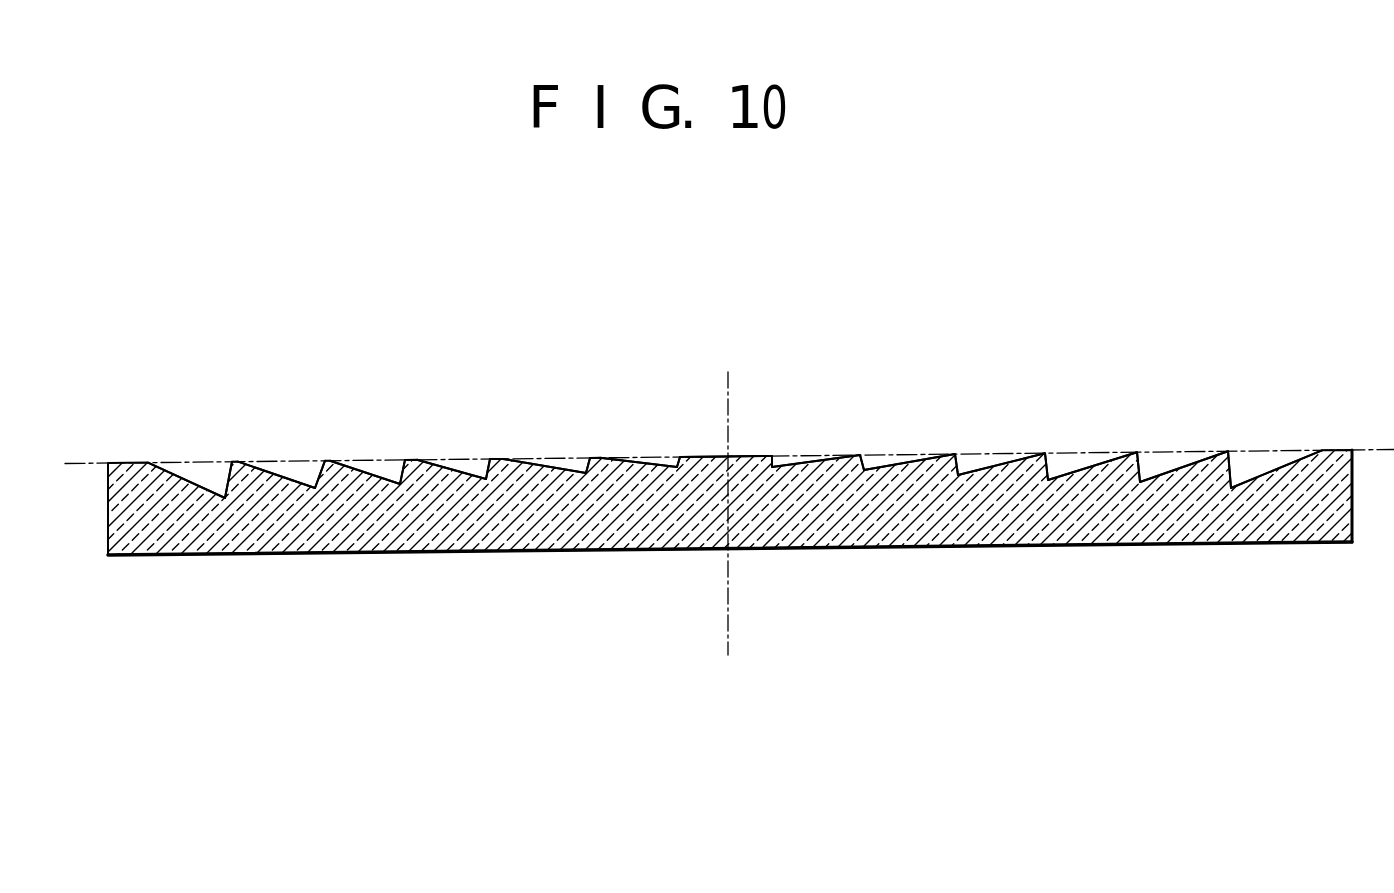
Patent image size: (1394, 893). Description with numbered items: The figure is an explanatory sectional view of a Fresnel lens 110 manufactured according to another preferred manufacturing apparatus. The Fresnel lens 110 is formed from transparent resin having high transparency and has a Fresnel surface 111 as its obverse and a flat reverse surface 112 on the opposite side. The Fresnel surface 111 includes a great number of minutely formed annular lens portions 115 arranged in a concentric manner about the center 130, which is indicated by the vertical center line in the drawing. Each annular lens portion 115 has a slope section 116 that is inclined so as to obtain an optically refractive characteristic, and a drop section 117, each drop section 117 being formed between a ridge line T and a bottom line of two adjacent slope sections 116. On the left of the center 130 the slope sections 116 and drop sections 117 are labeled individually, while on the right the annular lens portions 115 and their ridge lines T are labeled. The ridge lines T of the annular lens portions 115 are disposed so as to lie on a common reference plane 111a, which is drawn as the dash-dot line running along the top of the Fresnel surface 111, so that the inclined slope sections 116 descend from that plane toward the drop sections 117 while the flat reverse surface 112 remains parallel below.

The Fresnel lens 110 is at (812, 346).
The Fresnel surface 111 is at (713, 449).
The reference plane 111a is at (90, 462).
The flat reverse surface 112 is at (918, 549).
The annular lens portions 115 is at (826, 454).
The slope sections 116 is at (183, 480).
The drop sections 117 is at (223, 495).
The center 130 is at (731, 620).
The ridge line T is at (860, 456).